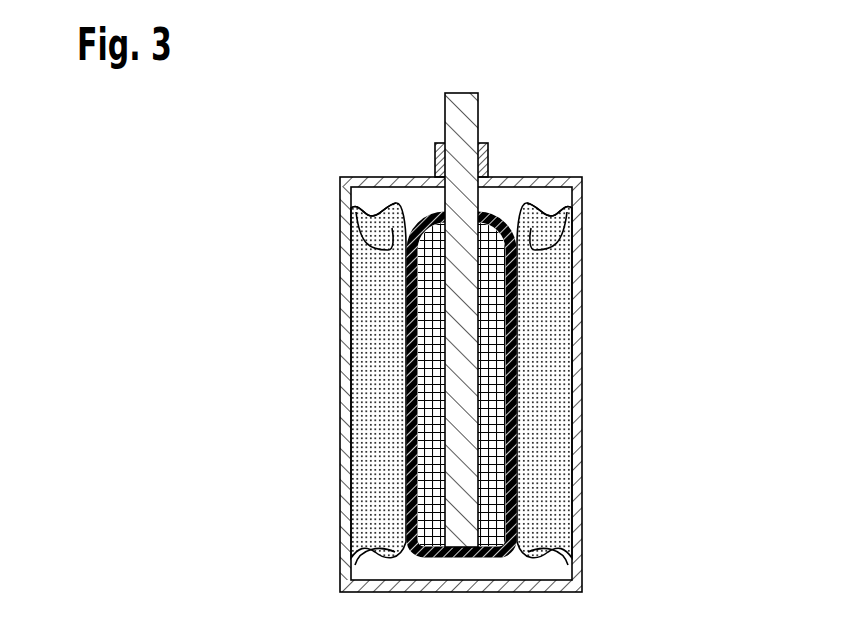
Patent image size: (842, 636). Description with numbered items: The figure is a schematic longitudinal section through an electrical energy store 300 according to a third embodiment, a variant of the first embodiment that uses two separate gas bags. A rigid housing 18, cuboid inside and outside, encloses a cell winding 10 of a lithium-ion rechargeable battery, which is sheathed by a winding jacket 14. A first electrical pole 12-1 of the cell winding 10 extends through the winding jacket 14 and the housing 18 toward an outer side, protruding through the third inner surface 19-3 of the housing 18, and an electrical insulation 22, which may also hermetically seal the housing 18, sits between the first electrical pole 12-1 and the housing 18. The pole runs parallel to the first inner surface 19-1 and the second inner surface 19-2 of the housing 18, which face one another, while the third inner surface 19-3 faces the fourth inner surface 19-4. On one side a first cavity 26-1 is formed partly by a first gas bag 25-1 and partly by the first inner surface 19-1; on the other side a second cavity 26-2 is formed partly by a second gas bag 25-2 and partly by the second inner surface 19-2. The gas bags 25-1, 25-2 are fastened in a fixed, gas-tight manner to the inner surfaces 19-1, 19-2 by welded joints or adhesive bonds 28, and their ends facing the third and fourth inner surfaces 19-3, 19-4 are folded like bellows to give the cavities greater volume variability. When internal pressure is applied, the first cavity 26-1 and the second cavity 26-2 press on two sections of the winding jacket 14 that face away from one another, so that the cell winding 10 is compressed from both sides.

The electrical energy store 300 is at (182, 165).
The housing 18 is at (575, 283).
The first inner surface 19-1 is at (350, 379).
The second inner surface 19-2 is at (572, 384).
The third inner surface 19-3 is at (400, 199).
The fourth inner surface 19-4 is at (498, 566).
The first cavity 26-1 is at (383, 318).
The second cavity 26-2 is at (540, 315).
The first gas bag 25-1 is at (348, 245).
The second gas bag 25-2 is at (572, 247).
The welded joints or adhesive bonds 28 is at (358, 205).
The cell winding 10 is at (493, 414).
The winding jacket 14 is at (515, 455).
The electrical insulation 22 is at (490, 158).
The first electrical pole 12-1 is at (480, 122).